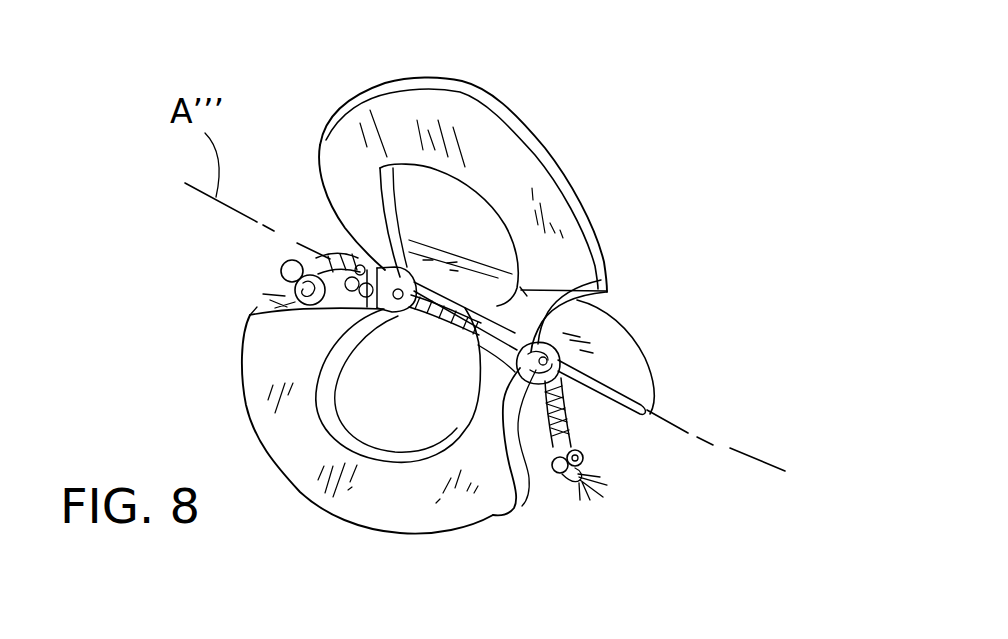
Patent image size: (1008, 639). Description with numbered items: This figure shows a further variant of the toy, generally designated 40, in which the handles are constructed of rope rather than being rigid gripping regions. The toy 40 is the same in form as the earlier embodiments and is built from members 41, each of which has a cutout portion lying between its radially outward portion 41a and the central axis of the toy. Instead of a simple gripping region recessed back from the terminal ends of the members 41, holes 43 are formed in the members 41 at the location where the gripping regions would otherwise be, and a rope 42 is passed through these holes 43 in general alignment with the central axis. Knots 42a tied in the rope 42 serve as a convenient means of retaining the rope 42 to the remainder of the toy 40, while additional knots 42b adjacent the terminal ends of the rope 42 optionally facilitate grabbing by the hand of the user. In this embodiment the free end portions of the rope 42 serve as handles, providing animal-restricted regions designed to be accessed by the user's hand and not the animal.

The toy 40 is at (582, 109).
The members 41 is at (590, 278).
The radially outward portions 41a is at (466, 128).
The rope 42 is at (578, 422).
The knots 42a is at (364, 262).
The additional knots 42b is at (282, 263).
The holes 43 is at (537, 340).